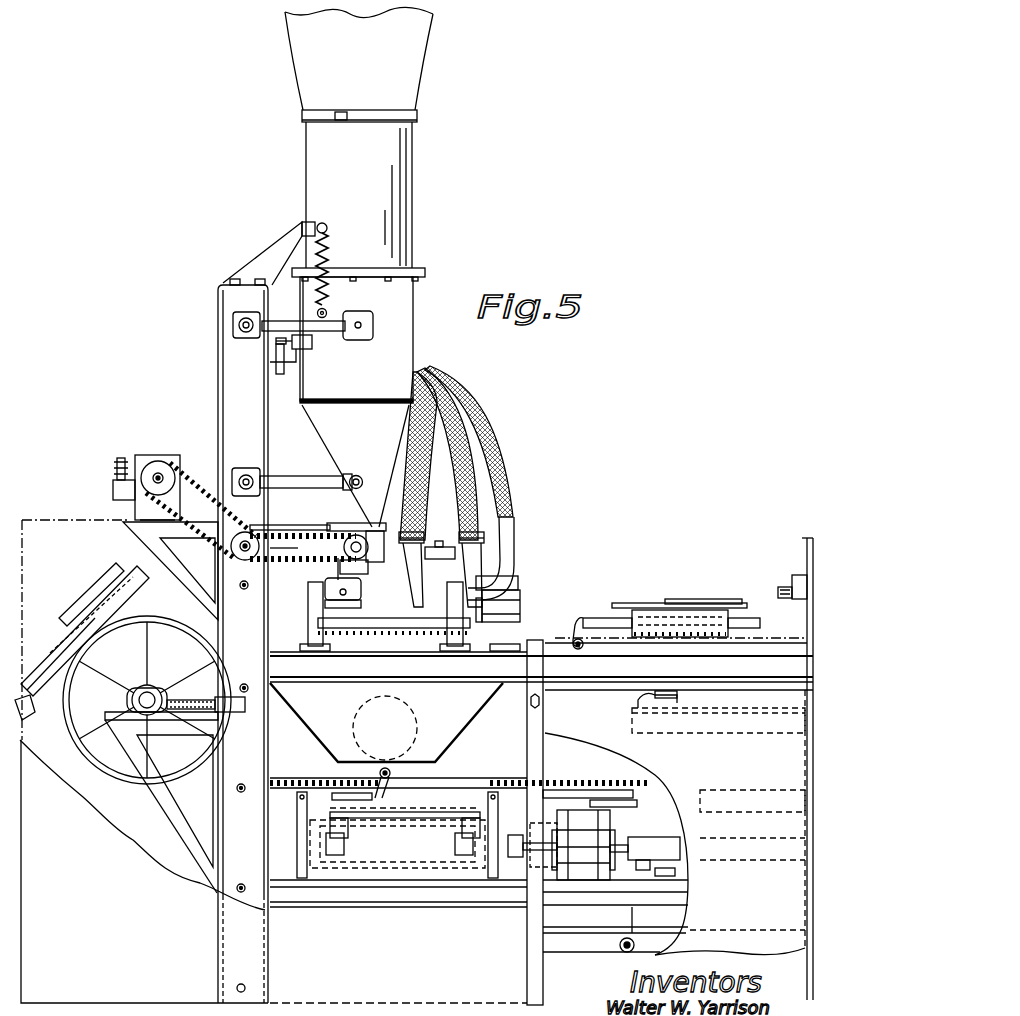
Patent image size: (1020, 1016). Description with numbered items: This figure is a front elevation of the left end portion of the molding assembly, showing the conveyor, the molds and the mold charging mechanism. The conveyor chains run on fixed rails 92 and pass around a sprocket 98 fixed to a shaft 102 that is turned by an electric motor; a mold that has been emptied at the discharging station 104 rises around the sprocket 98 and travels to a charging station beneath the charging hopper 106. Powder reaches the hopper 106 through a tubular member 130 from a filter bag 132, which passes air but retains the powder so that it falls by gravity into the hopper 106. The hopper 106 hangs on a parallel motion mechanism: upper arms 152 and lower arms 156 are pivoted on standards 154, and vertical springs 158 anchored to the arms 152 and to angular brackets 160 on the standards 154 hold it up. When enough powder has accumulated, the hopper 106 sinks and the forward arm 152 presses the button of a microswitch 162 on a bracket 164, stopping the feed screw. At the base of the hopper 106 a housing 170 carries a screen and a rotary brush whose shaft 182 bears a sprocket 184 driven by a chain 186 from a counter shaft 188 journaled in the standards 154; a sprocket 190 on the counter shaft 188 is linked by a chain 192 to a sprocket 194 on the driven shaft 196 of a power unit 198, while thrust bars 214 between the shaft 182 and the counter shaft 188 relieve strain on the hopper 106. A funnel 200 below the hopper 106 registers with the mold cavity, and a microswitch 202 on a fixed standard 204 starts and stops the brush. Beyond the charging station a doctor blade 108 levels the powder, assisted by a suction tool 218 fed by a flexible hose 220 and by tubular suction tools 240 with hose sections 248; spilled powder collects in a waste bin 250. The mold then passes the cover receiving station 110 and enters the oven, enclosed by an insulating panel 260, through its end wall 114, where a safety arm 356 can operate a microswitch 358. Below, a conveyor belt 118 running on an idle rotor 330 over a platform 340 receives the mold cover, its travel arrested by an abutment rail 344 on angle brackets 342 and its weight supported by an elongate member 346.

The fixed rails 92 is at (767, 675).
The sprocket 98 is at (62, 748).
The shaft 102 is at (147, 716).
The discharging station 104 is at (374, 912).
The charging hopper 106 is at (402, 358).
The doctor blade 108 is at (492, 600).
The cover receiving station 110 is at (698, 574).
The end wall of the oven 114 is at (805, 542).
The conveyor belt 118 is at (441, 842).
The tubular member 130 is at (400, 203).
The filter bag 132 is at (412, 72).
The upper arms 152 is at (337, 327).
The standards 154 is at (242, 402).
The lower arms 156 is at (313, 482).
The vertical springs 158 is at (326, 260).
The angular brackets 160 is at (265, 262).
The microswitch 162 is at (312, 345).
The bracket 164 is at (276, 360).
The housing 170 is at (358, 530).
The rotary shaft 182 is at (364, 553).
The sprocket 184 is at (336, 570).
The chain 186 is at (320, 533).
The counter shaft 188 is at (245, 560).
The sprocket 190 is at (232, 546).
The chain 192 is at (200, 470).
The sprocket 194 is at (157, 478).
The driven shaft 196 is at (140, 485).
The power unit 198 is at (174, 462).
The funnel 200 is at (360, 580).
The microswitch 202 is at (342, 600).
The fixed standard 204 is at (316, 636).
The thrust bars 214 is at (284, 548).
The suction tool 218 is at (482, 578).
The flexible hose 220 is at (472, 460).
The tubular suction tools 240 is at (416, 568).
The hose sections 248 is at (420, 450).
The waste bin 250 is at (452, 724).
The insulating panel 260 is at (605, 737).
The idle rotor 330 is at (305, 850).
The platform 340 is at (343, 877).
The angle brackets 342 is at (300, 828).
The abutment rail 344 is at (418, 808).
The elongate member 346 is at (396, 830).
The arm 356 is at (778, 592).
The microswitch 358 is at (796, 576).